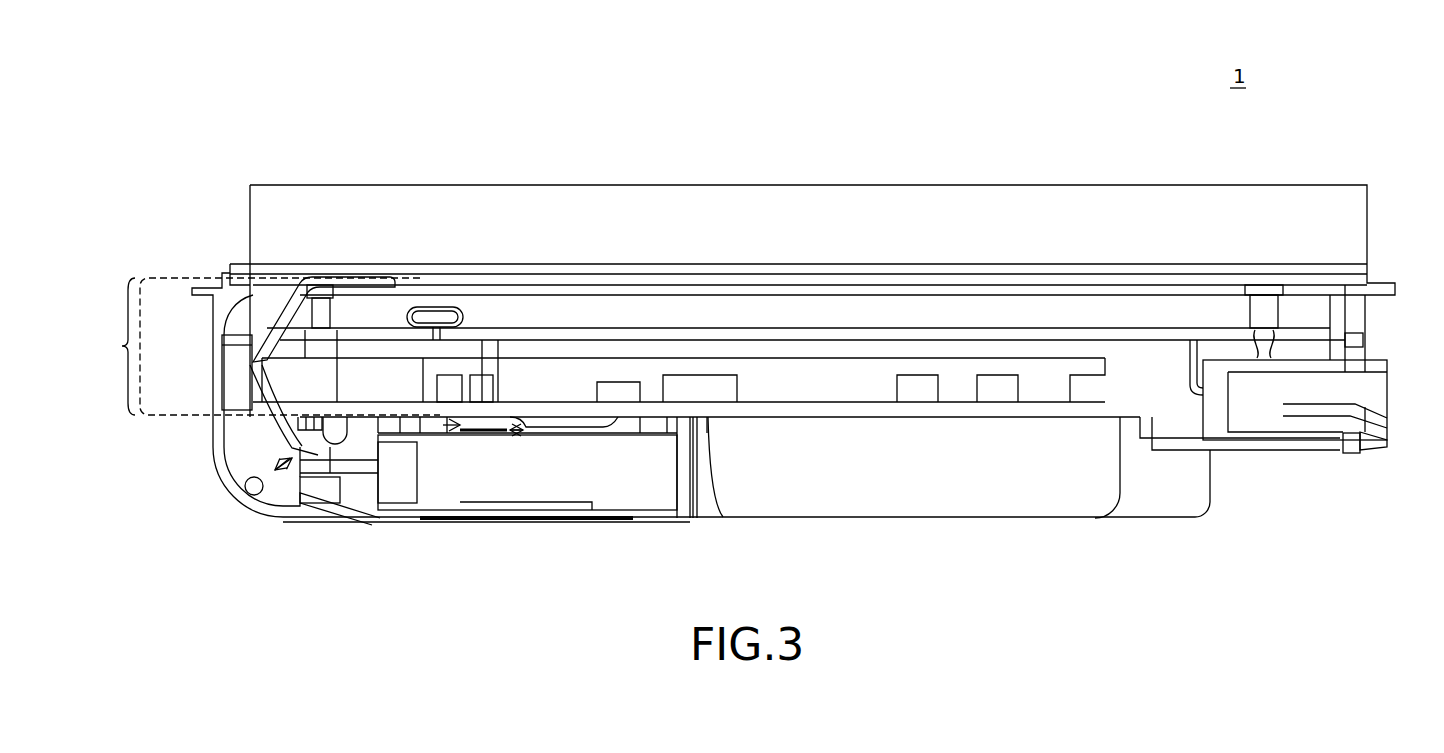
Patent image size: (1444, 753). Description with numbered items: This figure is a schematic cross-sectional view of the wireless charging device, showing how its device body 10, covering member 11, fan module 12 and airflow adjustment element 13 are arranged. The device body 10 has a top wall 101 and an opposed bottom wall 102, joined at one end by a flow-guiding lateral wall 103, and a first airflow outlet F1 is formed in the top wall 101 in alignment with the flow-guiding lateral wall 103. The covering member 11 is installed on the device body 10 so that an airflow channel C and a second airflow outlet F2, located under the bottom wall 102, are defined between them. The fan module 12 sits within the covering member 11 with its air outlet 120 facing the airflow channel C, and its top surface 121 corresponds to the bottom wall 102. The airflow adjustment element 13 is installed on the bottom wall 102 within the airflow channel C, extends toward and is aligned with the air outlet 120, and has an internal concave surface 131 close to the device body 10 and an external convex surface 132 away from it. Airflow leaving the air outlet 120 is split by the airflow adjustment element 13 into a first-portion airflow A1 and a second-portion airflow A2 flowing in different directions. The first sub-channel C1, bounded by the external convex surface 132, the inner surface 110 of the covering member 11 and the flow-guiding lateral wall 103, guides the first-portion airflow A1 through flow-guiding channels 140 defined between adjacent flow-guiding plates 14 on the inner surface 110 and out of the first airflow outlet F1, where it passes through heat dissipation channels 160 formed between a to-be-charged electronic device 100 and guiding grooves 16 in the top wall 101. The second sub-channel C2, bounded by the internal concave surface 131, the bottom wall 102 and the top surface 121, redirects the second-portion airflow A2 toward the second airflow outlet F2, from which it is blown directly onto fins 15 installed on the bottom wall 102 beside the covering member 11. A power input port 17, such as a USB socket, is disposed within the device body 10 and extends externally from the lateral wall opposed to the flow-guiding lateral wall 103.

The device body 10 is at (306, 60).
The top wall 101 is at (557, 275).
The bottom wall 102 is at (912, 445).
The flow-guiding lateral wall 103 is at (259, 272).
The covering member 11 is at (228, 450).
The inner surface 110 is at (256, 480).
The fan module 12 is at (437, 72).
The air outlet 120 is at (358, 545).
The top surface 121 is at (780, 313).
The airflow adjustment element 13 is at (563, 72).
The internal concave surface 131 is at (347, 430).
The external convex surface 132 is at (298, 548).
The flow-guiding plates 14 is at (238, 348).
The flow-guiding channel 140 is at (240, 383).
The fins 15 is at (1000, 503).
The guiding grooves 16 is at (798, 255).
The heat dissipation channels 160 is at (1078, 266).
The power input port 17 is at (1367, 390).
The to-be-charged electronic device 100 is at (1020, 200).
The first-portion airflow A1 is at (377, 434).
The second-portion airflow A2 is at (440, 420).
The airflow channel C is at (688, 72).
The first sub-channel C1 is at (205, 440).
The second sub-channel C2 is at (625, 547).
The first airflow outlet F1 is at (306, 260).
The second airflow outlet F2 is at (697, 425).